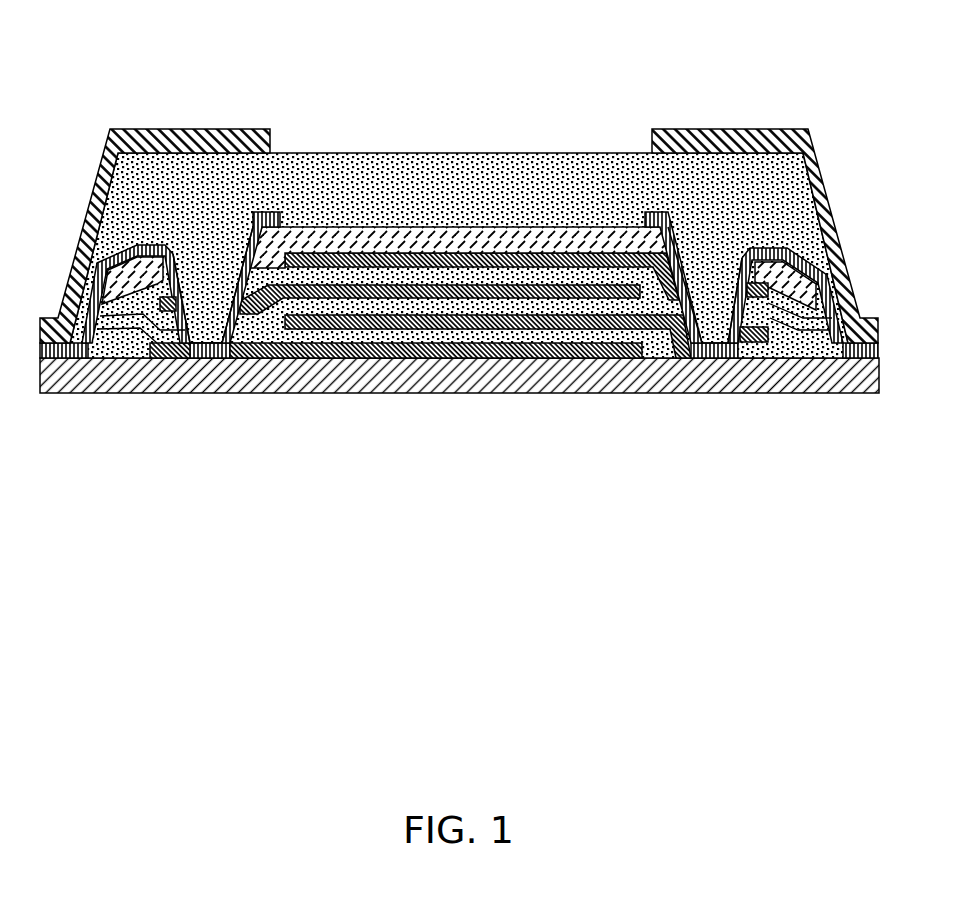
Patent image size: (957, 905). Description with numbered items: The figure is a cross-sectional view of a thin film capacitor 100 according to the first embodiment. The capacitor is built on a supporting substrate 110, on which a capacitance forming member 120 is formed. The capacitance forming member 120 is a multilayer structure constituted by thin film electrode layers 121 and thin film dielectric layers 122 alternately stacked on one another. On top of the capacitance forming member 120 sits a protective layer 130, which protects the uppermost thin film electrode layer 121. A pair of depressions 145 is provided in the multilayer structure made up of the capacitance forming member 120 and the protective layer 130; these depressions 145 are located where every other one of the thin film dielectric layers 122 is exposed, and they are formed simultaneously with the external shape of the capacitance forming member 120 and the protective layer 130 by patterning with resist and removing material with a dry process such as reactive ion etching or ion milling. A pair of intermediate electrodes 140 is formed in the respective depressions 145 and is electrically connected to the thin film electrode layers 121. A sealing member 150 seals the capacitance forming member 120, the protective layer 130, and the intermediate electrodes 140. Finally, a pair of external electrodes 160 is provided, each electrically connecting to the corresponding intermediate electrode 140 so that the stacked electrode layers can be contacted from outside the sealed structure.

The thin film capacitor 100 is at (447, 88).
The supporting substrate 110 is at (320, 393).
The capacitance forming member 120 is at (420, 414).
The thin film electrode layer 121 is at (541, 348).
The thin film dielectric layer 122 is at (585, 333).
The protective layer 130 is at (513, 226).
The intermediate electrode 140 is at (265, 211).
The depression 145 is at (206, 247).
The sealing member 150 is at (393, 195).
The external electrode 160 is at (130, 128).